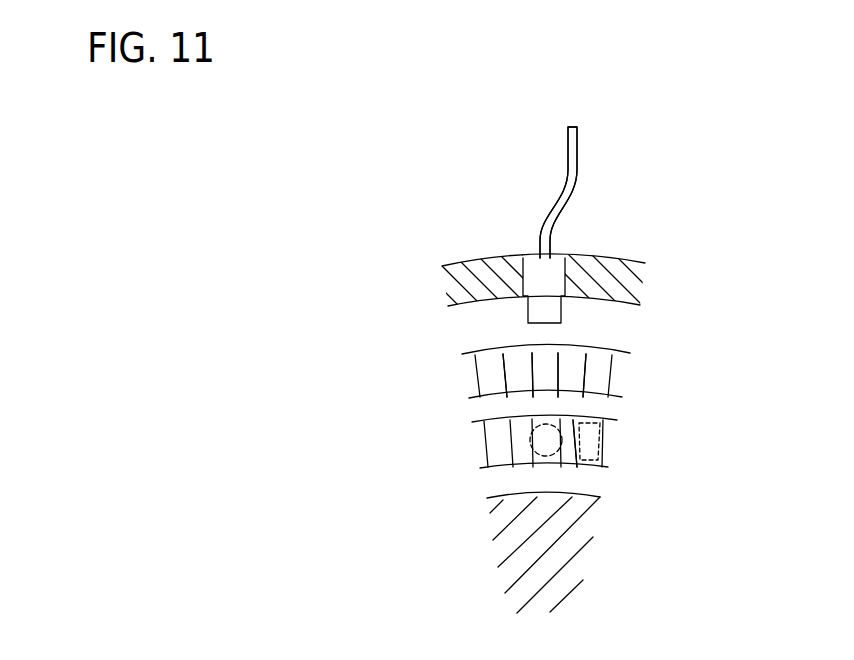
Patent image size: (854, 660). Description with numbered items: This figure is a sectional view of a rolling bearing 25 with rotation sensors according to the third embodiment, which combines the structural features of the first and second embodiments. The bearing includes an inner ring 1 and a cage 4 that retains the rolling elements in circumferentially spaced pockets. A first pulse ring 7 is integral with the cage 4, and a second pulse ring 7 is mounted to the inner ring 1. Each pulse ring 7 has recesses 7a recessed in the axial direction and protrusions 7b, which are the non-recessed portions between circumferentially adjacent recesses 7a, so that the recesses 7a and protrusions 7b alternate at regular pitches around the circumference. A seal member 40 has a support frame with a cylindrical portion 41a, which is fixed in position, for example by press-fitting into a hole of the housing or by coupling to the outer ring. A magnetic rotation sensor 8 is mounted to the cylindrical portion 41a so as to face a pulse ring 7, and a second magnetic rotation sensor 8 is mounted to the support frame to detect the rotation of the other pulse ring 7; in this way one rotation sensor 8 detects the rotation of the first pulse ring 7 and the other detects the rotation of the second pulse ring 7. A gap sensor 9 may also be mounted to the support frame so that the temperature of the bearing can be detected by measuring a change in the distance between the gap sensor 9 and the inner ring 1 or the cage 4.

The inner ring 1 is at (565, 555).
The cage 4 is at (467, 352).
The pulse ring 7 is at (617, 378).
The recess 7a is at (510, 368).
The protrusion 7b is at (574, 421).
The magnetic rotation sensor 8 is at (530, 283).
The gap sensor 9 is at (592, 445).
The rolling bearing 25 is at (443, 233).
The seal member 40 is at (612, 255).
The cylindrical portion 41a is at (633, 283).